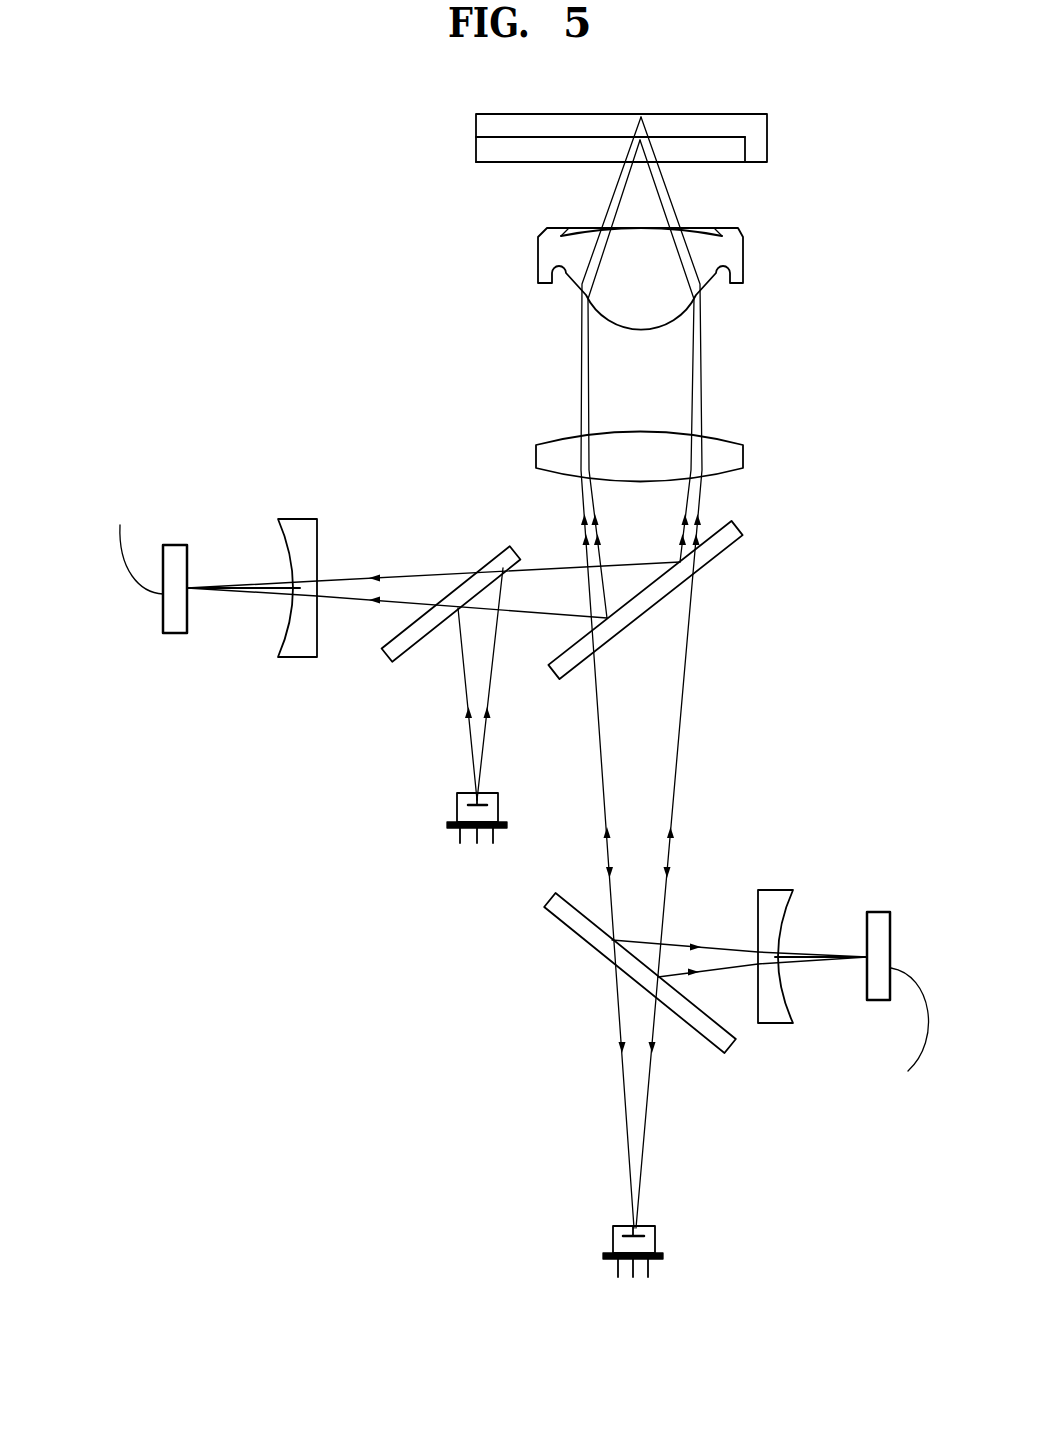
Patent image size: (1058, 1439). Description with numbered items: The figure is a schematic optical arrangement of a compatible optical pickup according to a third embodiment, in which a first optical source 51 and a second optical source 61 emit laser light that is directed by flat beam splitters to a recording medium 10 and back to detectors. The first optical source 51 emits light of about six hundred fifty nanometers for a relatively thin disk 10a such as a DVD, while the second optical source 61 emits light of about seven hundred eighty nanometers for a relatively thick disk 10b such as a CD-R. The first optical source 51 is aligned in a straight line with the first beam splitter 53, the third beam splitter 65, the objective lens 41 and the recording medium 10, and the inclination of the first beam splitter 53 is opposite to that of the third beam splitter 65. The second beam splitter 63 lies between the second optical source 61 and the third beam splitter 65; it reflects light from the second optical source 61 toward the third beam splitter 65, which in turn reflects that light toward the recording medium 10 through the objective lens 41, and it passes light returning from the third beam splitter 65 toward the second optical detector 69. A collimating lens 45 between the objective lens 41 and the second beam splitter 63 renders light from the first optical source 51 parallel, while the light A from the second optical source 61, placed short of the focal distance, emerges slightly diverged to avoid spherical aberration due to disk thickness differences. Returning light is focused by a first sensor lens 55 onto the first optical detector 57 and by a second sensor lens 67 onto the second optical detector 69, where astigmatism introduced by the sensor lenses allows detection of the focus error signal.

The recording medium 10 is at (626, 133).
The relatively thin disk 10a is at (485, 151).
The relatively thick disk 10b is at (493, 123).
The objective lens 41 is at (743, 257).
The collimating lens 45 is at (743, 455).
The first optical source 51 is at (655, 1240).
The first beam splitter 53 is at (553, 892).
The first sensor lens 55 is at (772, 890).
The first optical detector 57 is at (878, 1000).
The second optical source 61 is at (498, 812).
The second beam splitter 63 is at (492, 560).
The third beam splitter 65 is at (742, 536).
The second sensor lens 67 is at (303, 657).
The second optical detector 69 is at (181, 633).
The light emitted from the second optical source A is at (588, 397).